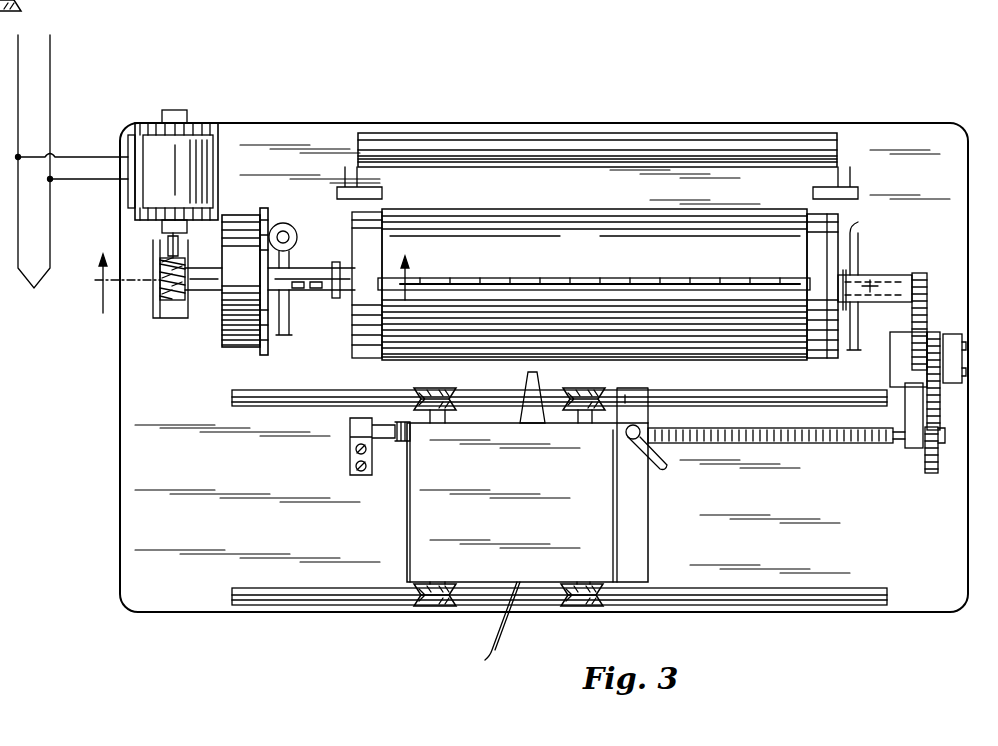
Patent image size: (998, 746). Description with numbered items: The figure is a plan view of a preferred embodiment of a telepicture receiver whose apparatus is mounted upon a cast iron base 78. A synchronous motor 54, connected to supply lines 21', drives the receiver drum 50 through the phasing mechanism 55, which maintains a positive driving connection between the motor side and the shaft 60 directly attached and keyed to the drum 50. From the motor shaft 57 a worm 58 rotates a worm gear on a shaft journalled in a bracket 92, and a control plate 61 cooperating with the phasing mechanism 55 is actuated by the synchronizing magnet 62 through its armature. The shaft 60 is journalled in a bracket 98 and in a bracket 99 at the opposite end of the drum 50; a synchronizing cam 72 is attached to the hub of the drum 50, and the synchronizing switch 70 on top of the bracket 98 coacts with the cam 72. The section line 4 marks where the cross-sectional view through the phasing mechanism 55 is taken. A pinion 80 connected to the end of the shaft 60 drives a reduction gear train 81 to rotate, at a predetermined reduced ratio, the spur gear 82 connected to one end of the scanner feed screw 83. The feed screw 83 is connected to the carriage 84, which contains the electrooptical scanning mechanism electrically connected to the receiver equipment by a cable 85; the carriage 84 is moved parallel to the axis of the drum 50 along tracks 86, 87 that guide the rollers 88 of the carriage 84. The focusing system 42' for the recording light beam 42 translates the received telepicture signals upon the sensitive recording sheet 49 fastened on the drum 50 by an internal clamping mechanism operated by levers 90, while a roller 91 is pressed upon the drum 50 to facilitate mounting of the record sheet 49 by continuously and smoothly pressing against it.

The cast iron base 78 is at (950, 538).
The supply lines 21' is at (72, 172).
The section line 4— 4 is at (252, 278).
The synchronous motor 54 is at (140, 150).
The motor shaft 57 is at (168, 248).
The worm 58 is at (160, 293).
The bracket 92 is at (203, 270).
The phasing mechanism 55 is at (232, 336).
The control plate 61 is at (265, 356).
The bracket 98 is at (300, 275).
The synchronizing magnet 62 is at (286, 225).
The synchronizing switch 70 is at (320, 296).
The synchronizing cam 72 is at (336, 301).
The roller 91 is at (718, 148).
The sensitive recording sheet 49 is at (800, 352).
The receiver drum 50 is at (824, 358).
The recording light beam 42 is at (594, 329).
The focusing system 42' is at (545, 395).
The levers 90 is at (853, 248).
The bracket 99 is at (872, 300).
The shaft 60 is at (876, 290).
The pinion 80 is at (927, 284).
The reduction gear train 81 is at (944, 327).
The spur gear 82 is at (931, 474).
The scanner feed screw 83 is at (878, 446).
The track 86 is at (700, 397).
The track 87 is at (752, 600).
The rollers 88 is at (600, 388).
The carriage 84 is at (648, 518).
The cable 85 is at (506, 638).